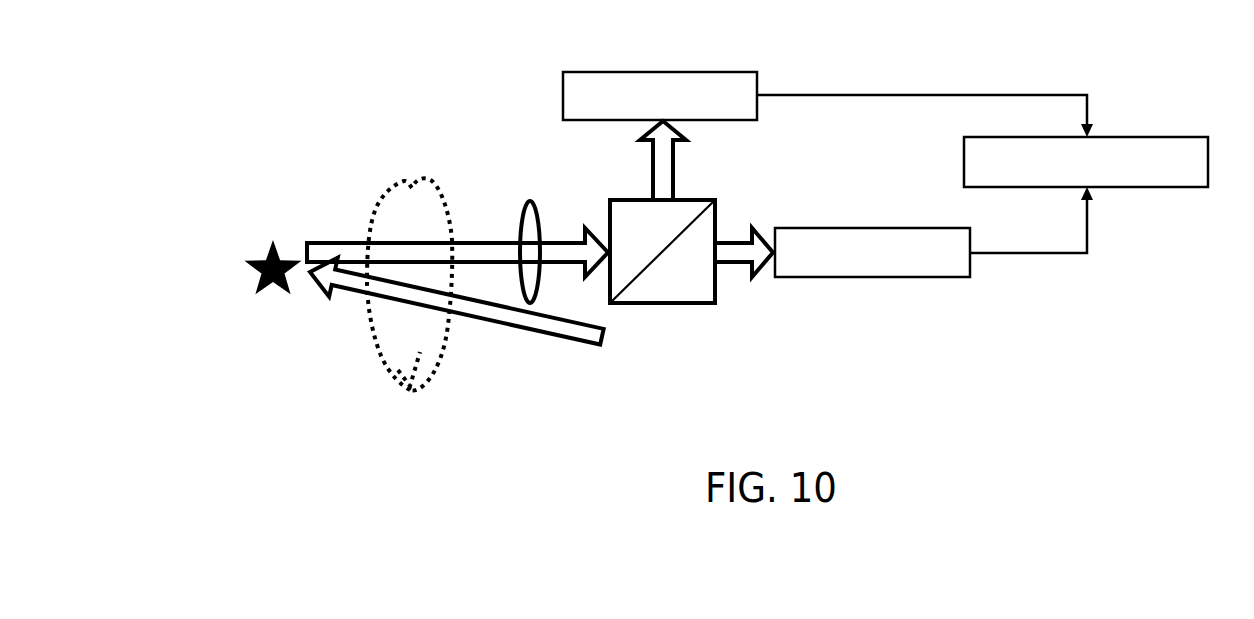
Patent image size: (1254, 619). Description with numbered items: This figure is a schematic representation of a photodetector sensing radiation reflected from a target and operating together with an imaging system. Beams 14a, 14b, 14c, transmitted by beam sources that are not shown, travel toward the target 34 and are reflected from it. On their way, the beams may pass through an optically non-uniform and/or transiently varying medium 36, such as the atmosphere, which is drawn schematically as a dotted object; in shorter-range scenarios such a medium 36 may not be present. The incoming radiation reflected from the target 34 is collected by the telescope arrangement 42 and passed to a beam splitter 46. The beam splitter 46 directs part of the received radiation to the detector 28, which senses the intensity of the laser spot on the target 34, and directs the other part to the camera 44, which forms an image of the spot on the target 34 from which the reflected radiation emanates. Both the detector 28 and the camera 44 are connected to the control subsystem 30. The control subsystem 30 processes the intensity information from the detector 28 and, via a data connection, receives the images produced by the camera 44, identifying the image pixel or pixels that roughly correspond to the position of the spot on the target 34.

The target 34 is at (262, 220).
The medium 36 is at (376, 398).
The beam 14a is at (456, 349).
The beam 14b is at (456, 349).
The beam 14c is at (490, 318).
The telescope arrangement 42 is at (527, 200).
The beam splitter 46 is at (655, 258).
The camera 44 is at (660, 72).
The detector 28 is at (872, 277).
The control subsystem 30 is at (1208, 162).